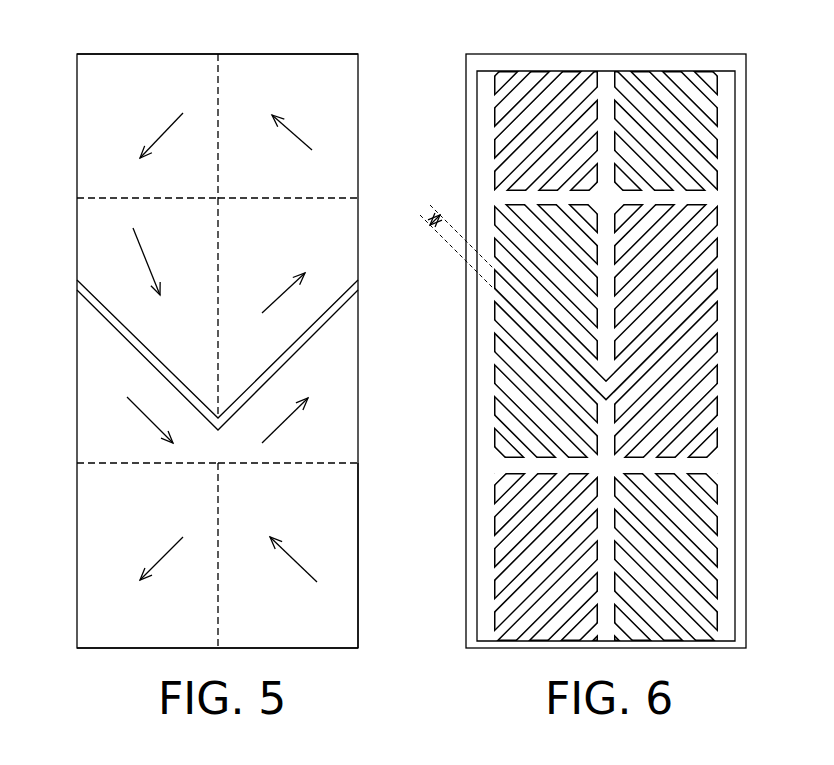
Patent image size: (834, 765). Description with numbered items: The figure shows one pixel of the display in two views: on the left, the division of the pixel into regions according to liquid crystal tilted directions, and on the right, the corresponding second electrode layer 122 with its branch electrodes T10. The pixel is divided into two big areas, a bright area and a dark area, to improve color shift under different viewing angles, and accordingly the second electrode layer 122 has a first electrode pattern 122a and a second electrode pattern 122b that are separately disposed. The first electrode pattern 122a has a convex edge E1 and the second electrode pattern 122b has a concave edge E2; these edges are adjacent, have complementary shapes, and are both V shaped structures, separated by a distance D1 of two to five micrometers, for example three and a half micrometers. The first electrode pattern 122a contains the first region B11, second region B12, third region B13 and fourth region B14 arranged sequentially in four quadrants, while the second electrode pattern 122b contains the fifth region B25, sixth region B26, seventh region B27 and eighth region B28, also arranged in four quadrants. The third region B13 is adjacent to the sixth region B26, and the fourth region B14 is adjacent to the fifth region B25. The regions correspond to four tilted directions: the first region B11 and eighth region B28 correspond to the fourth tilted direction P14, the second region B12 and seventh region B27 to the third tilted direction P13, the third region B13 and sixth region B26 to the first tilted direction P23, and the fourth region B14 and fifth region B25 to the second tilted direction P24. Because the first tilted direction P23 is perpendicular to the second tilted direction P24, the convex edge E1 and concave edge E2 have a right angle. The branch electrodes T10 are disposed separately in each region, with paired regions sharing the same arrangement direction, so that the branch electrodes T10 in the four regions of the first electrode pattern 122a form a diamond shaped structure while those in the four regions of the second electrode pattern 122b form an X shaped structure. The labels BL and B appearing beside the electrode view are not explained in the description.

In FIG. 5, the second electrode layer 122 is at (420, 28).
In FIG. 6, the second electrode layer 122 is at (817, 28).
In FIG. 5, the first electrode pattern 122a is at (358, 152).
In FIG. 6, the first electrode pattern 122a is at (746, 178).
In FIG. 5, the second electrode pattern 122b is at (358, 523).
In FIG. 6, the second electrode pattern 122b is at (746, 436).
In FIG. 5, the first region B11 is at (266, 82).
In FIG. 6, the first region B11 is at (640, 70).
In FIG. 5, the second region B12 is at (122, 82).
In FIG. 6, the second region B12 is at (540, 70).
In FIG. 5, the third region B13 is at (124, 226).
In FIG. 6, the third region B13 is at (492, 206).
In FIG. 5, the fourth region B14 is at (266, 226).
In FIG. 6, the fourth region B14 is at (728, 230).
In FIG. 5, the fifth region B25 is at (355, 359).
In FIG. 6, the fifth region B25 is at (728, 362).
In FIG. 5, the sixth region B26 is at (125, 359).
In FIG. 6, the sixth region B26 is at (492, 418).
In FIG. 5, the seventh region B27 is at (125, 493).
In FIG. 6, the seventh region B27 is at (492, 577).
In FIG. 5, the eighth region B28 is at (266, 493).
In FIG. 6, the eighth region B28 is at (728, 558).
In FIG. 5, the third tilted direction P13 is at (153, 137).
In FIG. 5, the fourth tilted direction P14 is at (262, 130).
In FIG. 5, the first tilted direction P23 is at (150, 228).
In FIG. 5, the second tilted direction P24 is at (290, 295).
In FIG. 5, the convex edge E1 is at (262, 378).
In FIG. 6, the convex edge E1 is at (708, 290).
In FIG. 5, the concave edge E2 is at (291, 362).
In FIG. 6, the concave edge E2 is at (493, 284).
In FIG. 6, the branch electrodes T10 is at (647, 123).
In FIG. 6, the distance D1 is at (449, 240).
In FIG. 6, the block line BL is at (823, 300).
In FIG. 6, the block B is at (824, 290).